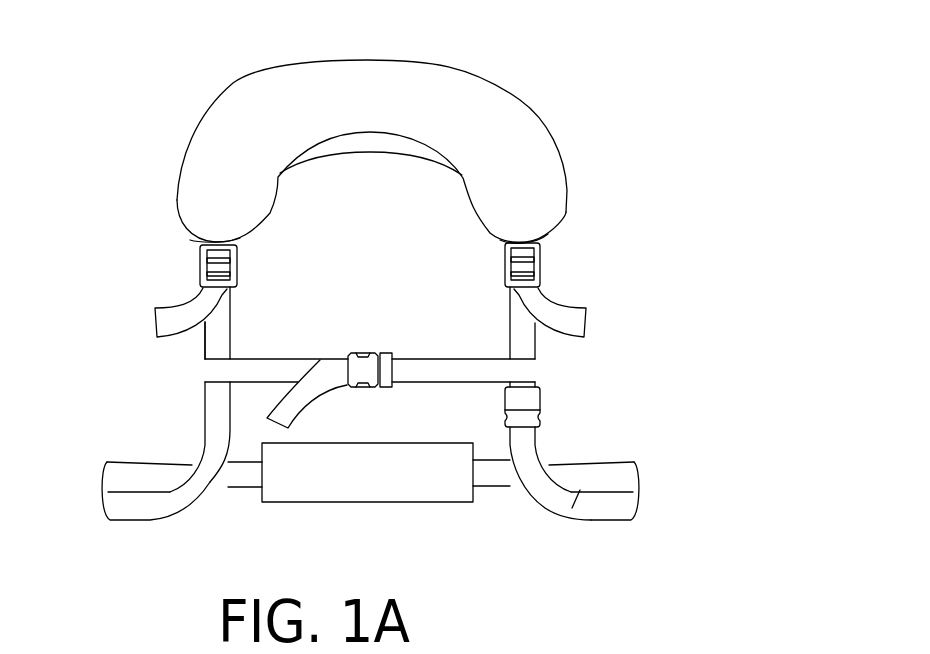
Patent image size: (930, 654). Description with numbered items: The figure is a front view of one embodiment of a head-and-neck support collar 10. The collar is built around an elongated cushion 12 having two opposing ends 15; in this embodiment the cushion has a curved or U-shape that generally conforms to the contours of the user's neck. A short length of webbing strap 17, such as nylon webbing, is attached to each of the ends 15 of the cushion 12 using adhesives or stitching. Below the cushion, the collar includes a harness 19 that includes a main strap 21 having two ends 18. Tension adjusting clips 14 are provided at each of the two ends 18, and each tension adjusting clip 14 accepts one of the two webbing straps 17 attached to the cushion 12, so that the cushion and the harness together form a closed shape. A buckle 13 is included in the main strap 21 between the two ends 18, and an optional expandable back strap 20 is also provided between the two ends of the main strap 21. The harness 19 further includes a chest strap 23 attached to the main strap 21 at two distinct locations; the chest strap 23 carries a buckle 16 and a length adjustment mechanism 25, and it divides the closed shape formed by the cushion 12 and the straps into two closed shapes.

The head-and-neck support collar 10 is at (648, 57).
The elongated cushion 12 is at (445, 80).
The buckle 13 is at (537, 412).
The tension adjusting clips 14 is at (200, 272).
The opposing ends 15 is at (217, 240).
The buckle 16 is at (382, 352).
The webbing strap 17 is at (175, 308).
The ends 18 is at (225, 318).
The harness 19 is at (192, 418).
The expandable back strap 20 is at (394, 502).
The main strap 21 is at (190, 496).
The chest strap 23 is at (418, 385).
The length adjustment mechanism 25 is at (322, 377).